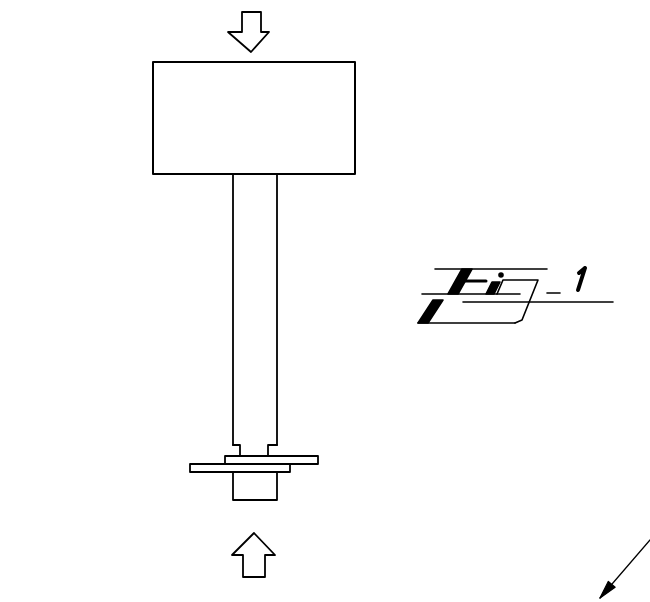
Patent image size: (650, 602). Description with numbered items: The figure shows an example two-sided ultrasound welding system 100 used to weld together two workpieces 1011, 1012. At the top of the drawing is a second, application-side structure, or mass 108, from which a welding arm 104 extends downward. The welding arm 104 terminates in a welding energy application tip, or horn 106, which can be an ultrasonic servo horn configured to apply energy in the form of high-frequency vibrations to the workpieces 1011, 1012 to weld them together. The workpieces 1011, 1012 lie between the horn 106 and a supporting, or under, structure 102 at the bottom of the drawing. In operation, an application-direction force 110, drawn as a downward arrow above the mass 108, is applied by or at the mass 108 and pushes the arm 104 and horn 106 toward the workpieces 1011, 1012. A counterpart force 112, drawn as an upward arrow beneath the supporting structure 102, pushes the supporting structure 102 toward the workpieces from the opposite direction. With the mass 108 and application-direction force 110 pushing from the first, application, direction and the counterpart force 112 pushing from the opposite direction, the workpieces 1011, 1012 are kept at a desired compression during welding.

The welding system 100 is at (375, 222).
The mass 108 is at (153, 116).
The welding arm 104 is at (233, 283).
The horn 106 is at (268, 449).
The first workpiece 1011 is at (292, 471).
The second workpiece 1012 is at (198, 465).
The supporting structure 102 is at (233, 488).
The application-direction force 110 is at (261, 20).
The counterpart force 112 is at (265, 558).